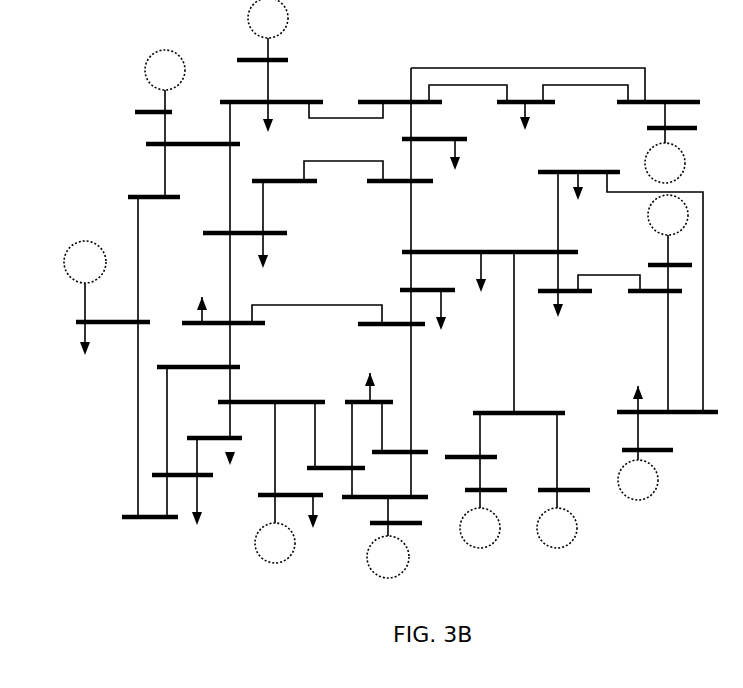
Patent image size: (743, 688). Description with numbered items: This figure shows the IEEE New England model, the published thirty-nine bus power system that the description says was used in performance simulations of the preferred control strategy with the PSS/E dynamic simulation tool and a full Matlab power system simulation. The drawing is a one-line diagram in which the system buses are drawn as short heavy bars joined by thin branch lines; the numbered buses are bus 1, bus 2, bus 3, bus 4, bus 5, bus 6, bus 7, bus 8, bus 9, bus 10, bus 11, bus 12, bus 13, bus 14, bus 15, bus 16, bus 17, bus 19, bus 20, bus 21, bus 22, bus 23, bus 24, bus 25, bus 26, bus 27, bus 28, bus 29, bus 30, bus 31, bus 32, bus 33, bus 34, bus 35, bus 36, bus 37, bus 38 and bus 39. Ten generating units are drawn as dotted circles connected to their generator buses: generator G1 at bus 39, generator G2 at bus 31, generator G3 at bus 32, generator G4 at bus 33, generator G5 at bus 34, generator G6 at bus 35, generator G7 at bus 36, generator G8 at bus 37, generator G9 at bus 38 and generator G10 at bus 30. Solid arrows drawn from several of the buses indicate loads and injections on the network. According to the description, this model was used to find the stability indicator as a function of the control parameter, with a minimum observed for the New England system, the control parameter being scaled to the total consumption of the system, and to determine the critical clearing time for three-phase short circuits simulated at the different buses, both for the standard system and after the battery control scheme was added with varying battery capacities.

The bus 1 is at (154, 187).
The bus 2 is at (193, 133).
The bus 3 is at (245, 221).
The bus 4 is at (209, 311).
The bus 5 is at (198, 355).
The bus 6 is at (271, 389).
The bus 7 is at (214, 425).
The bus 8 is at (182, 464).
The bus 9 is at (150, 505).
The bus 10 is at (400, 461).
The bus 11 is at (336, 456).
The bus 12 is at (357, 389).
The bus 13 is at (390, 427).
The bus 14 is at (391, 313).
The bus 15 is at (427, 278).
The bus 16 is at (415, 205).
The bus 17 is at (389, 169).
The bus 19 is at (519, 400).
The bus 20 is at (471, 443).
The bus 21 is at (564, 280).
The bus 22 is at (655, 279).
The bus 23 is at (664, 398).
The bus 24 is at (584, 145).
The bus 25 is at (271, 82).
The bus 26 is at (400, 90).
The bus 27 is at (434, 128).
The bus 28 is at (526, 90).
The bus 29 is at (658, 89).
The bus 30 is at (151, 94).
The bus 31 is at (290, 482).
The bus 32 is at (385, 484).
The bus 33 is at (564, 471).
The bus 34 is at (486, 479).
The bus 35 is at (670, 246).
The bus 36 is at (647, 440).
The bus 37 is at (254, 49).
The bus 38 is at (672, 110).
The bus 39 is at (113, 311).
The generator G1 is at (85, 262).
The generator G2 is at (275, 543).
The generator G3 is at (394, 538).
The generator G4 is at (546, 528).
The generator G5 is at (480, 528).
The generator G6 is at (668, 215).
The generator G7 is at (631, 475).
The generator G8 is at (268, 19).
The generator G9 is at (665, 149).
The generator G10 is at (165, 70).